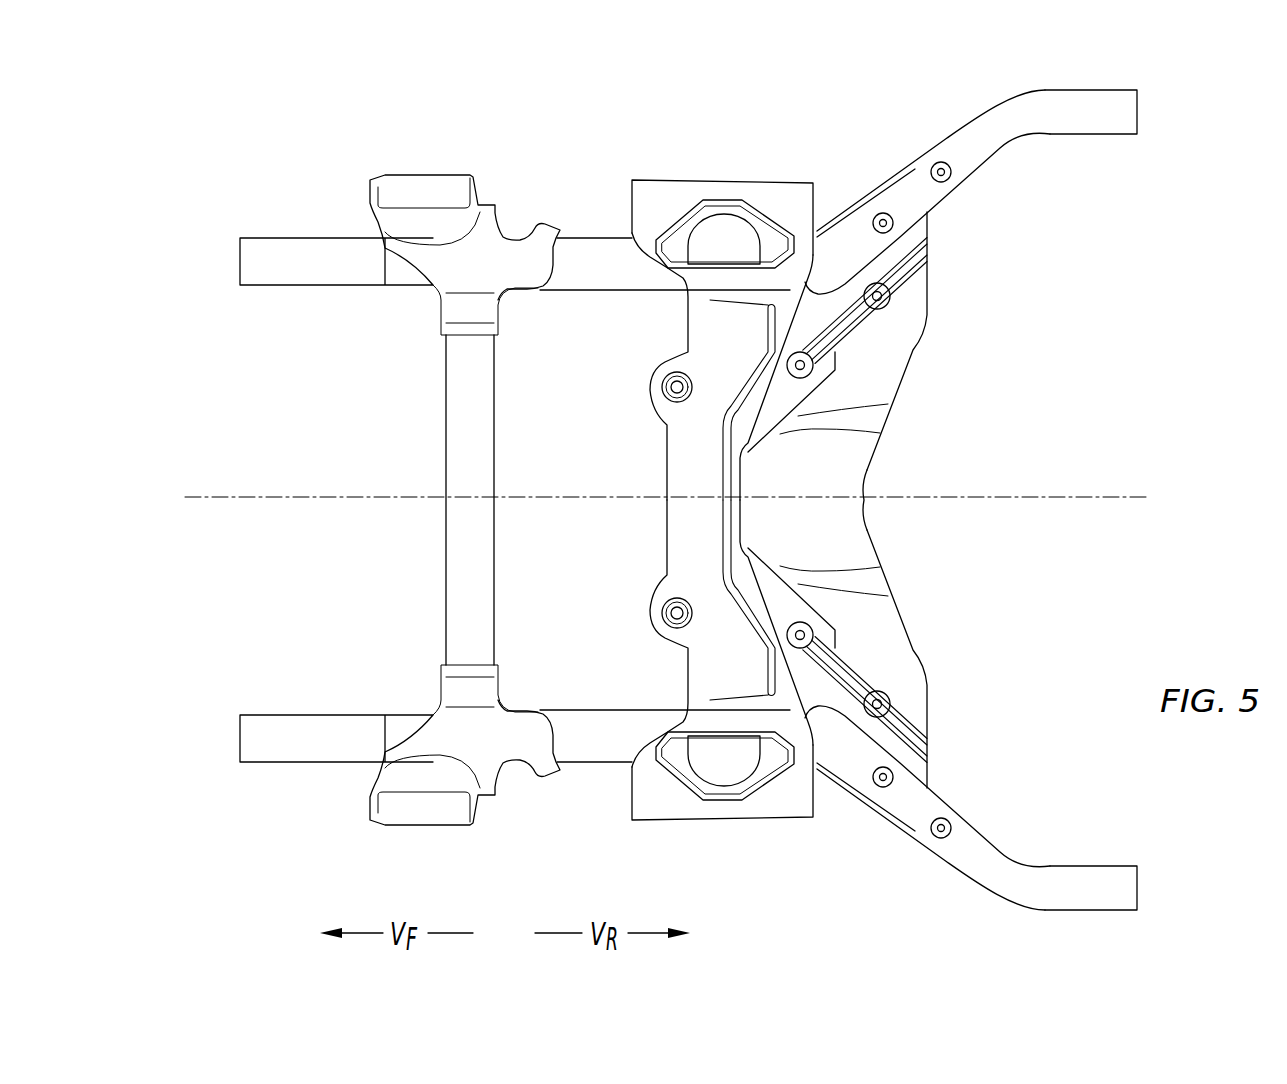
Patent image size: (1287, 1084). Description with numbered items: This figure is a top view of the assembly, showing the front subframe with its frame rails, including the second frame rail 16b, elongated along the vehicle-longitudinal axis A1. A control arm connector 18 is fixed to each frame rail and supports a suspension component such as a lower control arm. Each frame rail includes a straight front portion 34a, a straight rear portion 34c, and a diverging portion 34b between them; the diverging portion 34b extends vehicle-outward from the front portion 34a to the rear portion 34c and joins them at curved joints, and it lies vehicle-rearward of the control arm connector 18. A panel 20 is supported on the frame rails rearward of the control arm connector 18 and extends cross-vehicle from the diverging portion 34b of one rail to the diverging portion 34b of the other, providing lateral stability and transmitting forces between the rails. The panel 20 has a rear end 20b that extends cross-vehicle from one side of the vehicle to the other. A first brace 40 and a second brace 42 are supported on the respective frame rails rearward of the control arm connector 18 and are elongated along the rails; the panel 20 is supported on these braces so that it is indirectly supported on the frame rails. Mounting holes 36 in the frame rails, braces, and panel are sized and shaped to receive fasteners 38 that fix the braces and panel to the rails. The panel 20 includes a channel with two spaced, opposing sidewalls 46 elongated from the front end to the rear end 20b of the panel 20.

The second frame rail 16b is at (240, 250).
The control arm connector 18 is at (741, 170).
The panel 20 is at (848, 468).
The rear end 20b is at (870, 506).
The front portion 34a is at (585, 232).
The diverging portion 34b is at (941, 134).
The rear portion 34c is at (1114, 78).
The mounting holes 36 is at (903, 163).
The fasteners 38 is at (894, 226).
The first brace 40 is at (895, 700).
The second brace 42 is at (893, 300).
The sidewalls 46 is at (868, 418).
The vehicle-longitudinal axis A1 is at (669, 499).